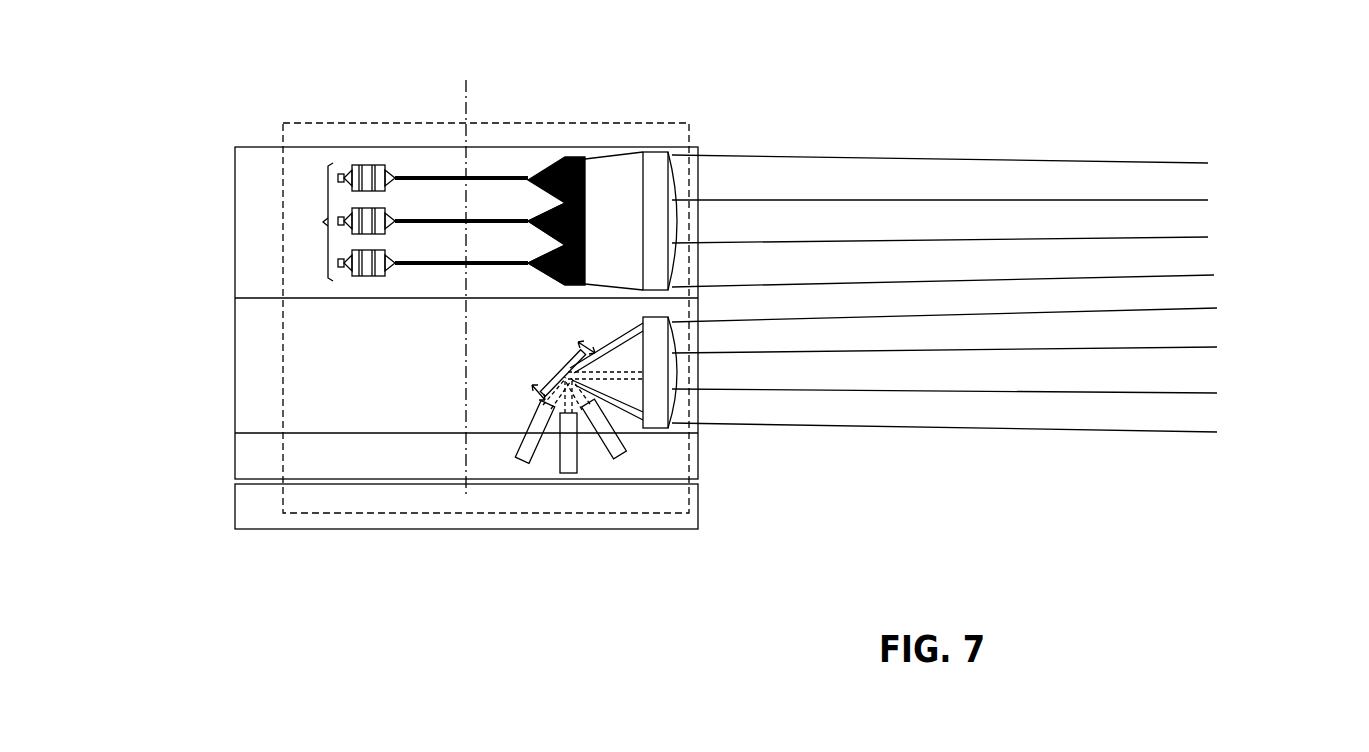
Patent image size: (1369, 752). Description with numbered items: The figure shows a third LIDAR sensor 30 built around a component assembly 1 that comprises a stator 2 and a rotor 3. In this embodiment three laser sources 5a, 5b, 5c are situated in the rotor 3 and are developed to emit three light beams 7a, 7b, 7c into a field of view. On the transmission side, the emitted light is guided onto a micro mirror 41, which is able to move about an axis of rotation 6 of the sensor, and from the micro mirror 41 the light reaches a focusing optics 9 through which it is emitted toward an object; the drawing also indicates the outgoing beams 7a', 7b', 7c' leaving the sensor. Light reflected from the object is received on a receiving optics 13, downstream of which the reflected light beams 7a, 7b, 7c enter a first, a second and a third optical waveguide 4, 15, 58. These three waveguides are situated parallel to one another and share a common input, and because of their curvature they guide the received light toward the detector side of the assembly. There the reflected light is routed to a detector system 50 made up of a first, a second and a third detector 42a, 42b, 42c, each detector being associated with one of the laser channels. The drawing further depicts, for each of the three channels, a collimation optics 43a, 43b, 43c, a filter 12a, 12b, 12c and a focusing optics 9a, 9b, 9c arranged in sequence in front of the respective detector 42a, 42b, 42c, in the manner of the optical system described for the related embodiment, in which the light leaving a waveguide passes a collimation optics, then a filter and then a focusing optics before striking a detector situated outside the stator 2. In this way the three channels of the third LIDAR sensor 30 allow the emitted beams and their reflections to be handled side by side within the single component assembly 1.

The component assembly 1 is at (648, 122).
The stator 2 is at (260, 512).
The rotor 3 is at (248, 460).
The first optical waveguide 4 is at (546, 162).
The laser source 5a is at (523, 463).
The laser source 5b is at (568, 475).
The laser source 5c is at (620, 458).
The axis of rotation 6 is at (466, 90).
The light beam 7a is at (985, 325).
The light beam 7b is at (985, 370).
The light beam 7c is at (984, 413).
The combined light beam 7a' is at (986, 171).
The combined light beam 7b' is at (986, 221).
The combined light beam 7c' is at (985, 264).
The focusing optics 9 is at (682, 375).
The laser diode 9a is at (353, 165).
The laser diode 9b is at (357, 210).
The laser diode 9c is at (352, 278).
The laser diode housing 12a is at (366, 165).
The laser diode housing 12b is at (345, 250).
The laser diode housing 12c is at (363, 277).
The receiving optics 13 is at (683, 224).
The second optical waveguide 15 is at (540, 212).
The third LIDAR sensor 30 is at (730, 128).
The micro mirror 41 is at (556, 367).
The first detector 42a is at (341, 173).
The second detector 42b is at (343, 220).
The third detector 42c is at (343, 270).
The collimator 43a is at (388, 168).
The collimator 43b is at (388, 210).
The collimator 43c is at (381, 277).
The detector system 50 is at (310, 222).
The third optical waveguide 58 is at (538, 270).